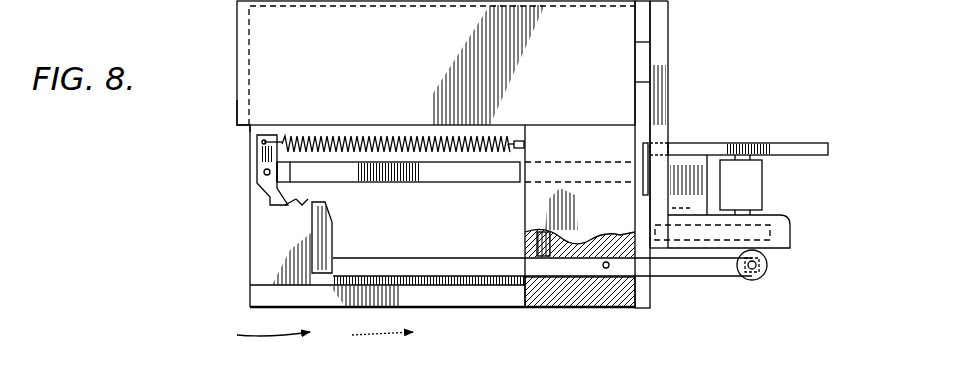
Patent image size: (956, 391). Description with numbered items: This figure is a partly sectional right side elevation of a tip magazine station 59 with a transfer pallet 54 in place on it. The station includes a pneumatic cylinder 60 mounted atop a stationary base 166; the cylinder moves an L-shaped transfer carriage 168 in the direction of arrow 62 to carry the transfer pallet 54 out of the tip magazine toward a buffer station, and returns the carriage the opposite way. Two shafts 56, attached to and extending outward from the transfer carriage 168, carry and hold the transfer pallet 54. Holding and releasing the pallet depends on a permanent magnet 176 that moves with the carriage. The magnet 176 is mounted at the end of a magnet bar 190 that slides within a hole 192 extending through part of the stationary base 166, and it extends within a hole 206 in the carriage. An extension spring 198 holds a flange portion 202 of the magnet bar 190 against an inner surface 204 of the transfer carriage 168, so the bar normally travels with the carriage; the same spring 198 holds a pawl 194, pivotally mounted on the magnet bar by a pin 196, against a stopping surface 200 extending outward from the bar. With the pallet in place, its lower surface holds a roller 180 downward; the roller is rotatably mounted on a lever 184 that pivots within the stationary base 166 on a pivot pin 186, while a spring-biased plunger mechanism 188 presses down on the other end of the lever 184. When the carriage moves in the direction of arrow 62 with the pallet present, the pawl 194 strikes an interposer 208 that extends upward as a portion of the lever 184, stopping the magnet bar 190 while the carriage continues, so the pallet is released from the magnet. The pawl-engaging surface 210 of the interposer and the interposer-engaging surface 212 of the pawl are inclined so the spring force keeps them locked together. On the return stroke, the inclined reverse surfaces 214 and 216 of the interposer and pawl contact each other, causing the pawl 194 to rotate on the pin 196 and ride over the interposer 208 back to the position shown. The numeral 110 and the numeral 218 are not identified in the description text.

The tip magazine station 59 is at (207, 31).
The pneumatic cylinder 60 is at (237, 108).
The extension spring 198 is at (388, 137).
The inner surface 204 is at (650, 116).
The transfer carriage 168 is at (668, 43).
The permanent magnet 176 is at (656, 166).
The hole 206 is at (655, 196).
The transfer pallet 54 is at (776, 123).
The shafts 56 is at (790, 224).
The pin 196 is at (262, 172).
The stopping surface 200 is at (278, 178).
The pawl 194 is at (257, 203).
The reverse surface of pawl 216 is at (298, 200).
The pawl-engaging surface 210 is at (305, 200).
The interposer 208 is at (300, 234).
The interposer-engaging surface 212 is at (295, 191).
The reverse surface of interposer 214 is at (325, 208).
The magnet bar 190 is at (420, 182).
The hole 192 is at (570, 163).
The spring-biased plunger mechanism 188 is at (530, 240).
The flange portion 202 is at (642, 152).
The guide 110 is at (648, 203).
The stationary base 166 is at (588, 310).
The lever 184 is at (485, 278).
The pivot pin 186 is at (612, 265).
The roller 180 is at (753, 281).
The direction of travel 218 is at (277, 337).
The arrow 62 is at (372, 337).